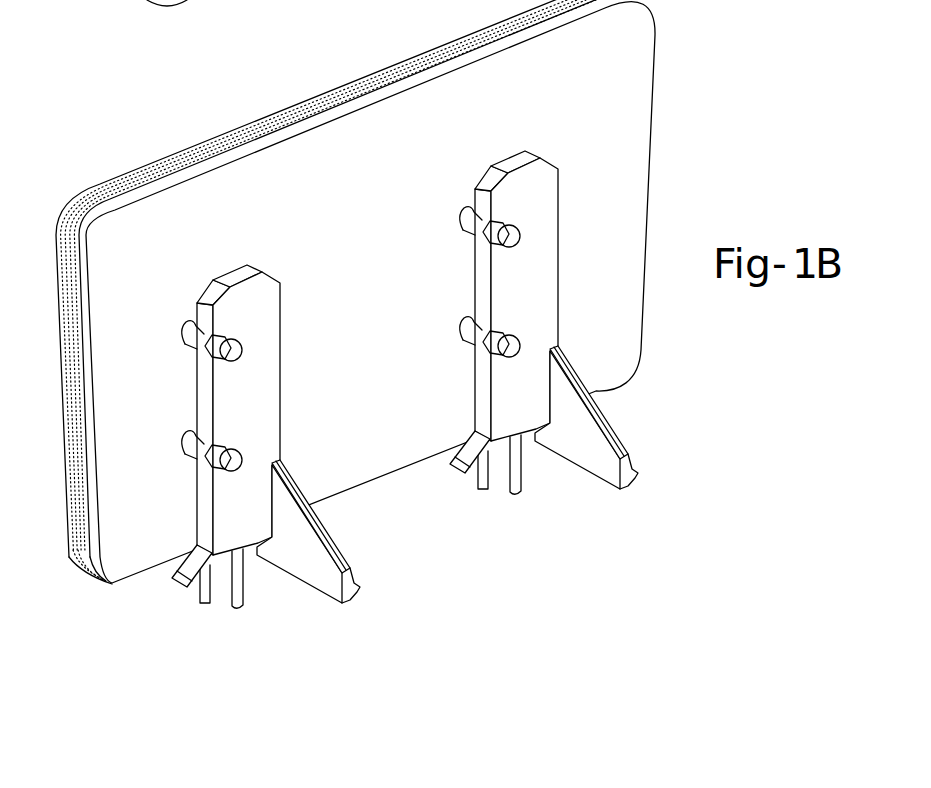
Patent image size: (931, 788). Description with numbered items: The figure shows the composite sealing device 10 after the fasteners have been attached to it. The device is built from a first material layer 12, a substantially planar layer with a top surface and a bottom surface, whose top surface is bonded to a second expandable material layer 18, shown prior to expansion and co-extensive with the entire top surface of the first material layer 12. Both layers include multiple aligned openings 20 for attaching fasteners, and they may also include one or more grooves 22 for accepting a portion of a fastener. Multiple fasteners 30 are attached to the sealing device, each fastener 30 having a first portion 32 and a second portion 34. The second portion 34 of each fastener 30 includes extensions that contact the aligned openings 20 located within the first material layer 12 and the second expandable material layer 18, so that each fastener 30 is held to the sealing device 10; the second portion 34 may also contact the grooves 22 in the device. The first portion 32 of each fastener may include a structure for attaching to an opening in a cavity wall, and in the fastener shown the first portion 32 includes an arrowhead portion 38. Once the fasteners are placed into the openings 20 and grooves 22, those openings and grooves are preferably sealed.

The composite sealing device 10 is at (718, 22).
The first material layer 12 is at (414, 292).
The second expandable material layer 18 is at (328, 292).
The aligned openings 20 is at (395, 339).
The grooves 22 is at (312, 9).
The fastener 30 is at (438, 506).
The first portion 32 is at (426, 487).
The second portion 34 is at (377, 353).
The arrowhead portion 38 is at (320, 541).